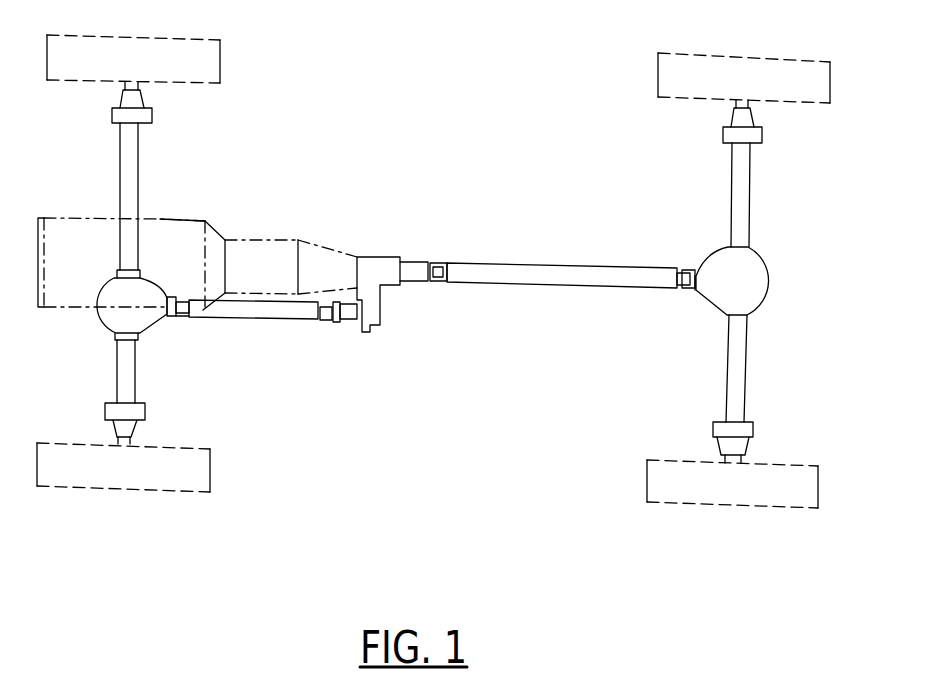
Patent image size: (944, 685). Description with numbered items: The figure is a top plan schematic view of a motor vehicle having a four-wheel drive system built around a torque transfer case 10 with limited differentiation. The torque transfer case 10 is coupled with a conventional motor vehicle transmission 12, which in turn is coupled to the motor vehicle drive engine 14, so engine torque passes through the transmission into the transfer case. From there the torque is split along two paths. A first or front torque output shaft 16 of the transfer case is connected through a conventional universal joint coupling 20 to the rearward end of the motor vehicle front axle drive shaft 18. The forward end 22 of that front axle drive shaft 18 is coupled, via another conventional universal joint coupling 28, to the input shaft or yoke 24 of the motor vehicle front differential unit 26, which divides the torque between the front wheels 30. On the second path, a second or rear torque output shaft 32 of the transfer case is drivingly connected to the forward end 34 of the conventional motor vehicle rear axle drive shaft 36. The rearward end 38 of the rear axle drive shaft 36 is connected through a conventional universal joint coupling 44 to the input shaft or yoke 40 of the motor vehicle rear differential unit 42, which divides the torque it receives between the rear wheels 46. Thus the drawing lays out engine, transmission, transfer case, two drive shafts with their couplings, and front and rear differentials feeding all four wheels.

The torque transfer case 10 is at (404, 250).
The motor vehicle transmission 12 is at (268, 240).
The motor vehicle drive engine 14 is at (173, 218).
The first or front torque output shaft 16 is at (337, 322).
The motor vehicle front axle drive shaft 18 is at (305, 323).
The universal joint coupling 20 is at (329, 322).
The forward end 22 is at (172, 297).
The input shaft or yoke 24 is at (174, 317).
The motor vehicle front differential unit 26 is at (113, 322).
The universal joint coupling 28 is at (168, 317).
The front wheels 30 is at (222, 62).
The second or rear torque output shaft 32 is at (432, 263).
The forward end 34 is at (437, 282).
The motor vehicle rear axle drive shaft 36 is at (527, 263).
The rearward end 38 is at (687, 290).
The input shaft or yoke 40 is at (695, 292).
The motor vehicle rear differential unit 42 is at (750, 280).
The universal joint coupling 44 is at (694, 270).
The rear wheels 46 is at (658, 82).